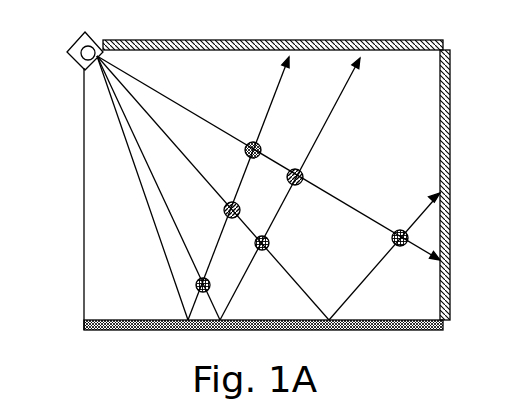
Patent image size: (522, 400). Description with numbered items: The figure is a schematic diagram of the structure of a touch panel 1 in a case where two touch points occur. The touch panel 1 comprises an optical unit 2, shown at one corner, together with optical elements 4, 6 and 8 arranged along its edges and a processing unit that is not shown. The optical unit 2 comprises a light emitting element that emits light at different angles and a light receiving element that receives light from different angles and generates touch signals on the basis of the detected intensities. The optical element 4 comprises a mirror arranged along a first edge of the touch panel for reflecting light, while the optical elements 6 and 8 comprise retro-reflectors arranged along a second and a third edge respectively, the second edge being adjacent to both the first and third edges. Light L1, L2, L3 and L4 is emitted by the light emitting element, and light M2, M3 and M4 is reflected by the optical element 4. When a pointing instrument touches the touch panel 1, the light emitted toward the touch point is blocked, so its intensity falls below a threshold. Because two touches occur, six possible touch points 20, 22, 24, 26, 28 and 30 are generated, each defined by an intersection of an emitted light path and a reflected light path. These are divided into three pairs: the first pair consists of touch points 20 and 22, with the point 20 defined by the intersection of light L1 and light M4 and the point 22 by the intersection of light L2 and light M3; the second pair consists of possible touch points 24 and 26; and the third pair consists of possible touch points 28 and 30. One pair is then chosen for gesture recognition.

The touch panel 1 is at (97, 190).
The optical unit 2 is at (76, 60).
The optical element 4 is at (257, 331).
The optical element 6 is at (451, 190).
The optical element 8 is at (259, 41).
The touch point 20 is at (252, 142).
The touch point 22 is at (269, 243).
The possible touch point 24 is at (303, 173).
The possible touch point 26 is at (224, 217).
The possible touch point 28 is at (210, 283).
The possible touch point 30 is at (392, 240).
The light L1 is at (268, 158).
The light L2 is at (213, 188).
The light L3 is at (158, 188).
The light L4 is at (142, 188).
The light M2 is at (384, 252).
The light M3 is at (290, 189).
The light M4 is at (238, 186).